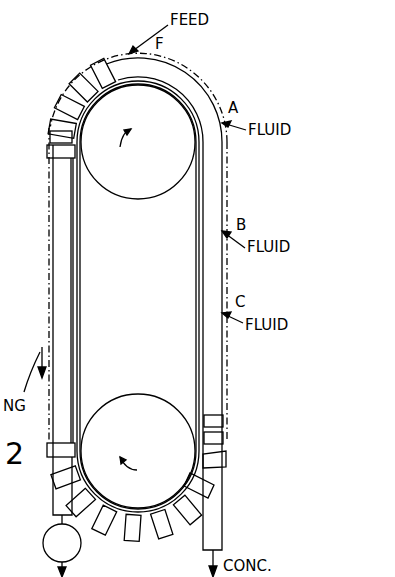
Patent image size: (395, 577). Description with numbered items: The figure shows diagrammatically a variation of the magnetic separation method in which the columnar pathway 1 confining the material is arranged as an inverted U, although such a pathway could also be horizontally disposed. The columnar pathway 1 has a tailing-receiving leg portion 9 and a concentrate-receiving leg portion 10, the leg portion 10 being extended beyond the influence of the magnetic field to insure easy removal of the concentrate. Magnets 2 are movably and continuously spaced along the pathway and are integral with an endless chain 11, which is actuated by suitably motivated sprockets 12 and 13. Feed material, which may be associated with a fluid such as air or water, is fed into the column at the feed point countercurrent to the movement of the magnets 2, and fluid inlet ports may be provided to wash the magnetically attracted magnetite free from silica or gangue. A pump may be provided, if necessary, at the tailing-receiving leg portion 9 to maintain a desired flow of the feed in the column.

The columnar pathway 1 is at (63, 278).
The magnets 2 is at (83, 71).
The tailing-receiving leg portion 9 is at (55, 486).
The concentrate-receiving leg portion 10 is at (222, 496).
The endless chain 11 is at (190, 287).
The sprocket 12 is at (104, 193).
The sprocket 13 is at (138, 437).